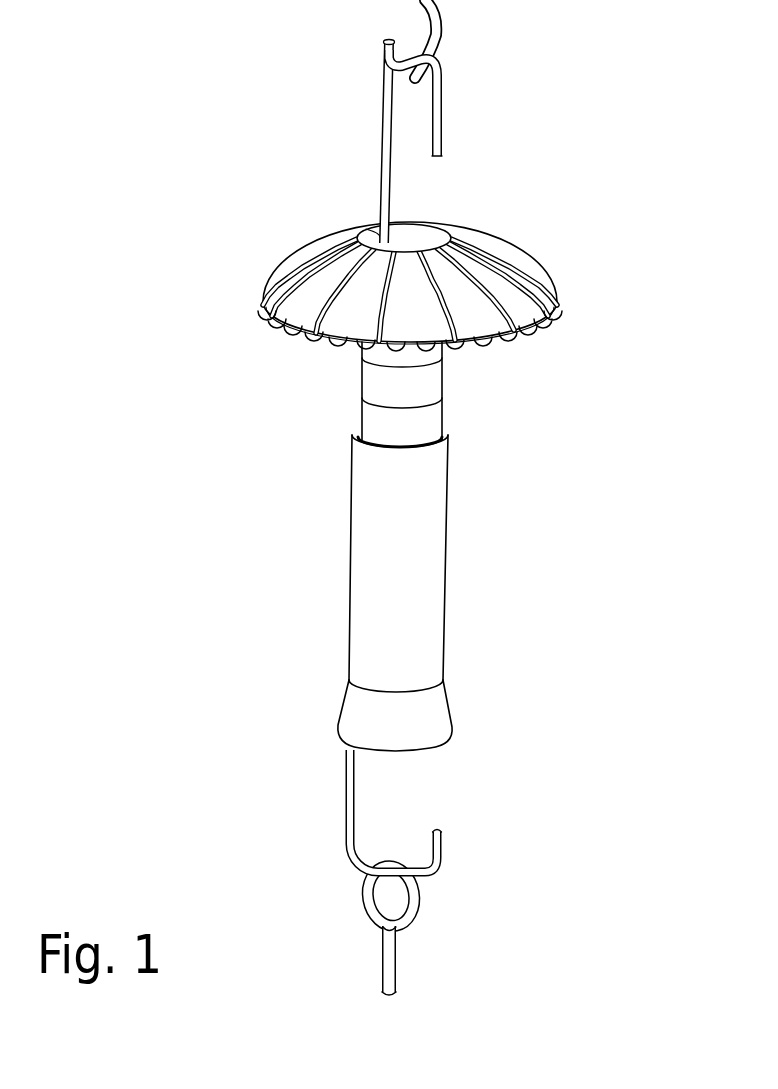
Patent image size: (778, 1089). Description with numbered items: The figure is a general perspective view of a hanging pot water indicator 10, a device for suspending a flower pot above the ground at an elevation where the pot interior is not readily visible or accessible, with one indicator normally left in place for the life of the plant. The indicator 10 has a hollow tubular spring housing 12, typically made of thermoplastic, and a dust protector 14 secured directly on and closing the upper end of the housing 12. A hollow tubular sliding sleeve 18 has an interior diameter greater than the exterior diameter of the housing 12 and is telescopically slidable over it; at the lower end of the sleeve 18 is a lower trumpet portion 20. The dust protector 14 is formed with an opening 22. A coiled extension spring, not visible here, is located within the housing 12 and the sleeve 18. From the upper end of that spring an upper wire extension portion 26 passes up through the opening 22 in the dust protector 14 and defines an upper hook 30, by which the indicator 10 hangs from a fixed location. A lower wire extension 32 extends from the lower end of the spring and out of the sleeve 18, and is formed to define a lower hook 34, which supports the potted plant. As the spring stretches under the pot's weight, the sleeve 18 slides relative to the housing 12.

The hanging pot water indicator 10 is at (203, 502).
The tubular spring housing 12 is at (418, 383).
The dust protector 14 is at (498, 200).
The sliding sleeve 18 is at (430, 580).
The lower trumpet portion 20 is at (448, 717).
The opening 22 is at (372, 220).
The upper wire extension portion 26 is at (380, 160).
The upper hook 30 is at (442, 112).
The lower wire extension 32 is at (346, 797).
The lower hook 34 is at (442, 855).